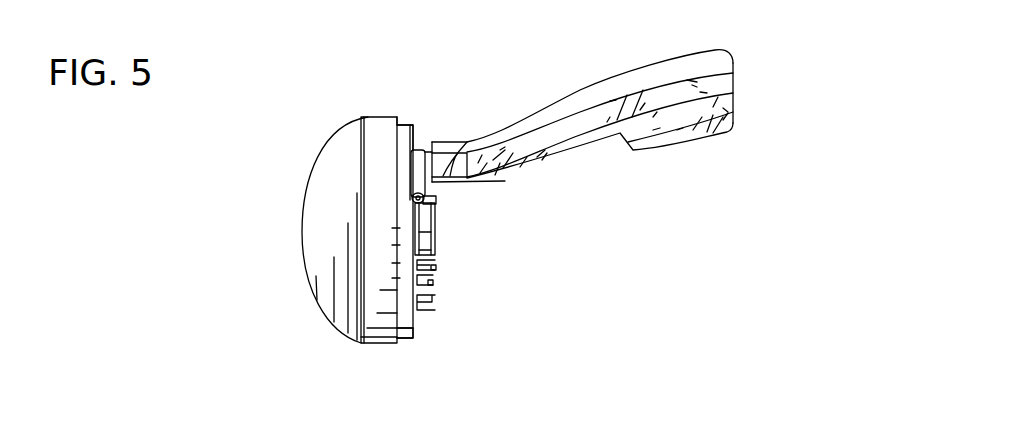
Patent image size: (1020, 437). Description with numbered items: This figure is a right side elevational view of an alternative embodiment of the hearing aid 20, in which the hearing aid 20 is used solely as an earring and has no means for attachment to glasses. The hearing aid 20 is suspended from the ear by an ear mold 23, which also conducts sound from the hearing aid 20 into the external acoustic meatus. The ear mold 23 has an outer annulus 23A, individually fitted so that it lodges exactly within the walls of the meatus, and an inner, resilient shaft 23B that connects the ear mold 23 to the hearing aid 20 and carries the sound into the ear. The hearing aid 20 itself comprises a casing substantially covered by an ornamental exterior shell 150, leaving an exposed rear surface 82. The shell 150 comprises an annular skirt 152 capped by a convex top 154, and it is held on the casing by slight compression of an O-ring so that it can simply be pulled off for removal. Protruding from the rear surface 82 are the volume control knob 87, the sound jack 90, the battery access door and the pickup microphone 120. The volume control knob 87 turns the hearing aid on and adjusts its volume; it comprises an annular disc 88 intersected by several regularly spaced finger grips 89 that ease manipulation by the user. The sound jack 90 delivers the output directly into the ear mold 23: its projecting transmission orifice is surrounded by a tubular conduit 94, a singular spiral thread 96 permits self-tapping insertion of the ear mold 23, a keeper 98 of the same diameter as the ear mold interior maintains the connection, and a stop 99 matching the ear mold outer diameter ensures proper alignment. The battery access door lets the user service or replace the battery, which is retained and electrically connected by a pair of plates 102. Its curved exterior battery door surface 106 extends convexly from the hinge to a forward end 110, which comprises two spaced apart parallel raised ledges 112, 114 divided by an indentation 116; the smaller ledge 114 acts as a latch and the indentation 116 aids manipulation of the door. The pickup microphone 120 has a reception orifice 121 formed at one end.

The hearing aid 20 is at (213, 168).
The ear mold 23 is at (467, 128).
The ear mold outer annulus 23A is at (680, 140).
The inner resilient shaft 23B is at (735, 88).
The rear surface 82 is at (412, 338).
The volume control knob 87 is at (430, 327).
The annular disc 88 is at (437, 277).
The finger grips 89 is at (443, 300).
The sound jack 90 is at (420, 133).
The tubular conduit 94 is at (490, 138).
The spiral thread 96 is at (503, 181).
The keeper 98 is at (432, 142).
The stop 99 is at (411, 150).
The plates 102 is at (437, 200).
The exterior battery door surface 106 is at (437, 212).
The battery door forward end 110 is at (403, 248).
The raised ledge 112 is at (437, 218).
The raised ledge 114 is at (437, 243).
The indentation 116 is at (437, 230).
The pickup microphone 120 is at (425, 170).
The reception orifice 121 is at (412, 200).
The ornamental exterior shell 150 is at (286, 240).
The skirt 152 is at (378, 343).
The convex top 154 is at (316, 284).